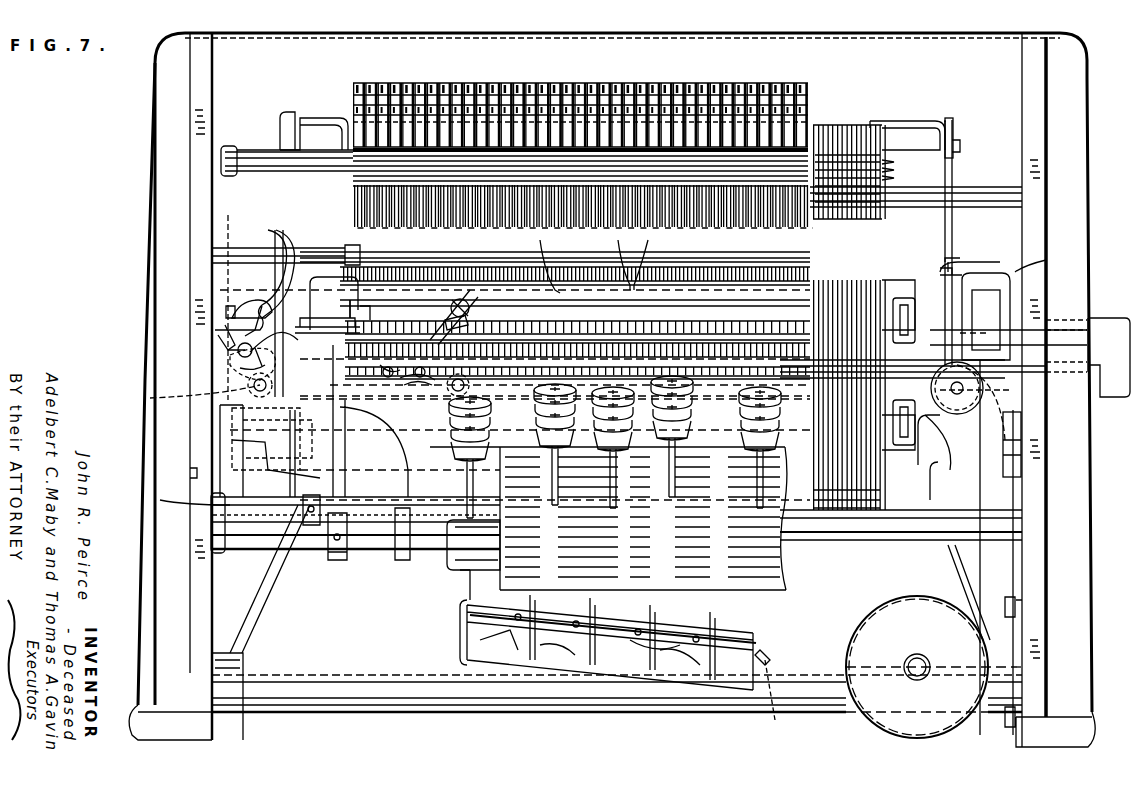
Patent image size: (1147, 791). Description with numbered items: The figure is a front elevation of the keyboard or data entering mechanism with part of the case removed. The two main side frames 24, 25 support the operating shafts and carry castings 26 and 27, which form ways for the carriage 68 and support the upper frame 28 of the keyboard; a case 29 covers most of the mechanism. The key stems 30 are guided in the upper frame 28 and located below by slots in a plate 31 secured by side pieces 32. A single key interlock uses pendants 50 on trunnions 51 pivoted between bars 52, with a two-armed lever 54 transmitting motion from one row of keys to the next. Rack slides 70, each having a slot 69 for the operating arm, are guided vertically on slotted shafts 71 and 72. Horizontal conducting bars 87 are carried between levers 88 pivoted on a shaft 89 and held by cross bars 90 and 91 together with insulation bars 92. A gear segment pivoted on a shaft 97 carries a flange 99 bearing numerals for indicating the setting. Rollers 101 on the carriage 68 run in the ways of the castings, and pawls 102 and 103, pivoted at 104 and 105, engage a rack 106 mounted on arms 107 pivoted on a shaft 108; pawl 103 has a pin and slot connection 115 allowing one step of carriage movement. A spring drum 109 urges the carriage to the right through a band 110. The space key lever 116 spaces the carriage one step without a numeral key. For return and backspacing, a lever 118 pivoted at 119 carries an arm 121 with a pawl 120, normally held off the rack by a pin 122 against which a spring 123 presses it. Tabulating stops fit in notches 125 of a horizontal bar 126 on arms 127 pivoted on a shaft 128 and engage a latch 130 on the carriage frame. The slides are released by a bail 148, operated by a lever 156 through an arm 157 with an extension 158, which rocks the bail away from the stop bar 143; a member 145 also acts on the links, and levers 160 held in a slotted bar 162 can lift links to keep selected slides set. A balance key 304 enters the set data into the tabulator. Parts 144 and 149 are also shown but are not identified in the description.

The main side frame 24 is at (205, 616).
The main side frame 25 is at (1032, 578).
The casting 26 is at (218, 278).
The casting 27 is at (215, 540).
The upper frame 28 is at (760, 572).
The case 29 is at (1092, 489).
The key stem 30 is at (676, 474).
The plate 31 is at (525, 660).
The side piece 32 is at (462, 630).
The pendant 50 is at (700, 660).
The trunnion 51 is at (580, 660).
The bar 52 is at (756, 626).
The two-armed lever 54 is at (769, 695).
The carriage 68 is at (250, 352).
The slot 69 is at (870, 493).
The rack slide 70 is at (870, 479).
The slotted shaft 71 is at (1005, 207).
The slotted shaft 72 is at (1010, 398).
The conducting bar 87 is at (895, 170).
The lever 88 is at (953, 173).
The shaft 89 is at (375, 700).
The cross bar 90 is at (900, 125).
The cross bar 91 is at (915, 460).
The insulation bar 92 is at (888, 143).
The shaft 97 is at (248, 152).
The flange 99 is at (810, 83).
The roller 101 is at (260, 450).
The pawl 102 is at (388, 378).
The pawl 103 is at (470, 318).
The pivot 104 is at (400, 380).
The pivot 105 is at (466, 305).
The rack 106 is at (560, 343).
The arm 107 is at (302, 465).
The shaft 108 is at (208, 504).
The spring drum 109 is at (885, 728).
The band 110 is at (888, 350).
The pin and slot connection 115 is at (508, 320).
The space key lever 116 is at (474, 482).
The lever 118 is at (268, 240).
The pivot 119 is at (226, 308).
The pawl 120 is at (230, 358).
The arm 121 is at (215, 334).
The pin 122 is at (150, 398).
The spring 123 is at (232, 318).
The notch 125 is at (655, 340).
The horizontal bar 126 is at (710, 367).
The arm 127 is at (345, 472).
The shaft 128 is at (258, 550).
The latch 130 is at (327, 316).
The stop bar 143 is at (334, 303).
The rack 144 is at (375, 280).
The member 145 is at (363, 307).
The bail 148 is at (952, 268).
The block 149 is at (960, 330).
The lever 156 is at (1100, 385).
The arm 157 is at (1012, 300).
The extension 158 is at (1022, 260).
The lever 160 is at (633, 272).
The slotted bar 162 is at (563, 272).
The balance key 304 is at (455, 408).